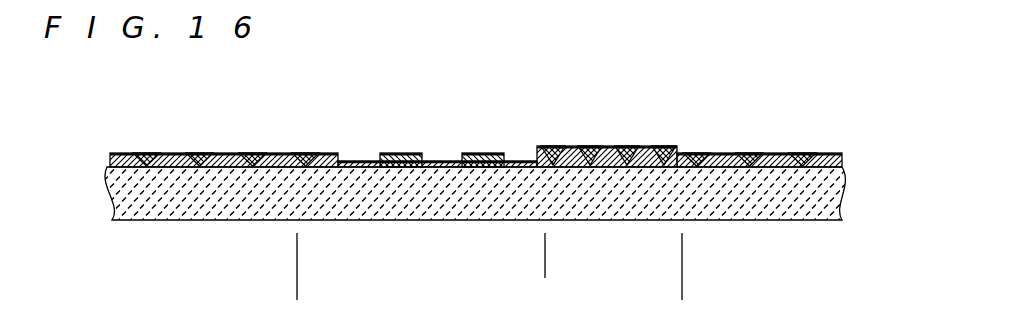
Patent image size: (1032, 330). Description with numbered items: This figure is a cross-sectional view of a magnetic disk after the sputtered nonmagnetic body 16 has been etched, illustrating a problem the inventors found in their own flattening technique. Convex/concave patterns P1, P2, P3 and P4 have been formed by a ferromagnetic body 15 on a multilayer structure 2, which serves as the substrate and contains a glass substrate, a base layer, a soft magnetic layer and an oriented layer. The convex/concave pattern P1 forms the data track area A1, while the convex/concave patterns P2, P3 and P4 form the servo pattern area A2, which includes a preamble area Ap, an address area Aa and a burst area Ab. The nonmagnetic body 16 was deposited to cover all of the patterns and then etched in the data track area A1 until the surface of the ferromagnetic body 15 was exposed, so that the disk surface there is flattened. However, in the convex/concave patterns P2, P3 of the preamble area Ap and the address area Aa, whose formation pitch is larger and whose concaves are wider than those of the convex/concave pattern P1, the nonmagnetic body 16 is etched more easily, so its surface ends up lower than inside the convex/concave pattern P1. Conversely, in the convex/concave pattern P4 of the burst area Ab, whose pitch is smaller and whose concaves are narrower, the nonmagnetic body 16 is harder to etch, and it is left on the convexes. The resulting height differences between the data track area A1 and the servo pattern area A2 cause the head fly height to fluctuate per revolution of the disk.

The multilayer structure 2 is at (841, 203).
The ferromagnetic body 15 is at (143, 152).
The nonmagnetic body 16 is at (173, 152).
The convex/concave pattern P1 is at (230, 141).
The convex/concave pattern P2 is at (437, 125).
The convex/concave pattern P3 is at (444, 141).
The convex/concave pattern P4 is at (614, 141).
The data track area A1 is at (297, 260).
The servo pattern area A2 is at (682, 288).
The preamble area Ap is at (421, 260).
The address area Aa is at (545, 260).
The burst area Ab is at (682, 260).